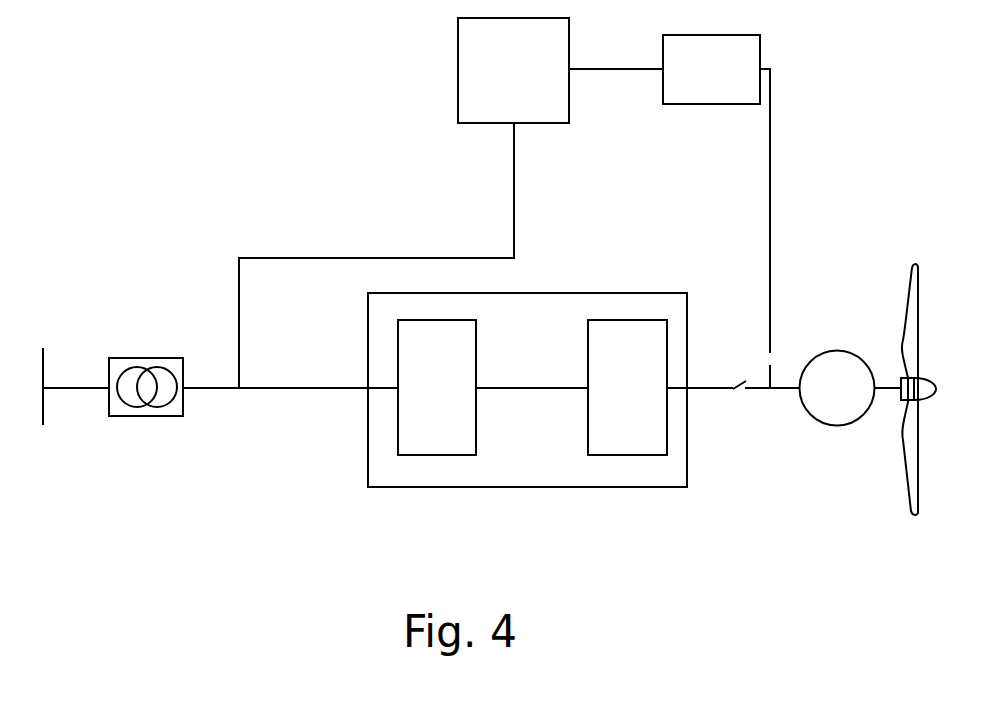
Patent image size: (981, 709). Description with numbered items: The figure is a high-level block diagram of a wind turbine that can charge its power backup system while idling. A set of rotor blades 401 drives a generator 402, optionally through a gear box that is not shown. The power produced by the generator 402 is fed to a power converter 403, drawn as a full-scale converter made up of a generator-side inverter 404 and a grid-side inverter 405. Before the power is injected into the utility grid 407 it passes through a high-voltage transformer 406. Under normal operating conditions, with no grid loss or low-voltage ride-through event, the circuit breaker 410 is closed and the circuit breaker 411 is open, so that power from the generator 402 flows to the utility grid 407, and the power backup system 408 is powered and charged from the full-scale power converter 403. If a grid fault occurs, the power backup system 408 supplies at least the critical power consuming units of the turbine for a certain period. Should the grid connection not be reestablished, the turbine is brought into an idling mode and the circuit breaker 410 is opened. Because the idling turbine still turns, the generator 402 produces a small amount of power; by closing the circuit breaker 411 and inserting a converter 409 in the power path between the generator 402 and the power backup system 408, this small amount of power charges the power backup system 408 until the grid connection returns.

The rotor blades 401 is at (908, 485).
The generator 402 is at (842, 410).
The power converter 403 is at (542, 292).
The generator-side inverter 404 is at (627, 387).
The grid-side inverter 405 is at (437, 387).
The high-voltage transformer 406 is at (130, 410).
The utility grid 407 is at (42, 408).
The power backup system 408 is at (513, 70).
The converter 409 is at (711, 69).
The circuit breaker 410 is at (745, 385).
The circuit breaker 411 is at (776, 362).